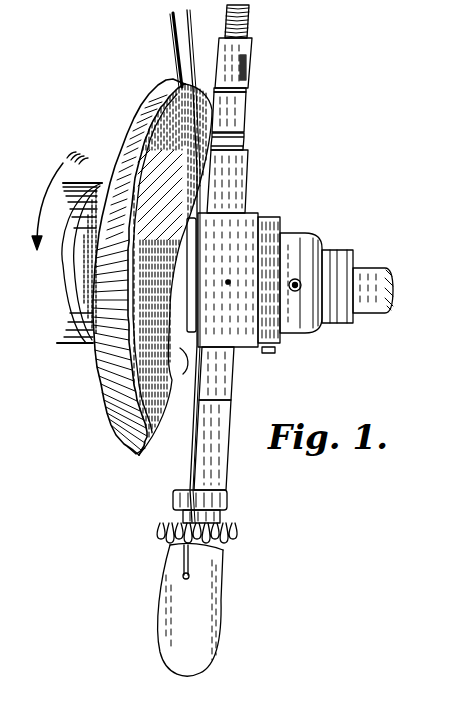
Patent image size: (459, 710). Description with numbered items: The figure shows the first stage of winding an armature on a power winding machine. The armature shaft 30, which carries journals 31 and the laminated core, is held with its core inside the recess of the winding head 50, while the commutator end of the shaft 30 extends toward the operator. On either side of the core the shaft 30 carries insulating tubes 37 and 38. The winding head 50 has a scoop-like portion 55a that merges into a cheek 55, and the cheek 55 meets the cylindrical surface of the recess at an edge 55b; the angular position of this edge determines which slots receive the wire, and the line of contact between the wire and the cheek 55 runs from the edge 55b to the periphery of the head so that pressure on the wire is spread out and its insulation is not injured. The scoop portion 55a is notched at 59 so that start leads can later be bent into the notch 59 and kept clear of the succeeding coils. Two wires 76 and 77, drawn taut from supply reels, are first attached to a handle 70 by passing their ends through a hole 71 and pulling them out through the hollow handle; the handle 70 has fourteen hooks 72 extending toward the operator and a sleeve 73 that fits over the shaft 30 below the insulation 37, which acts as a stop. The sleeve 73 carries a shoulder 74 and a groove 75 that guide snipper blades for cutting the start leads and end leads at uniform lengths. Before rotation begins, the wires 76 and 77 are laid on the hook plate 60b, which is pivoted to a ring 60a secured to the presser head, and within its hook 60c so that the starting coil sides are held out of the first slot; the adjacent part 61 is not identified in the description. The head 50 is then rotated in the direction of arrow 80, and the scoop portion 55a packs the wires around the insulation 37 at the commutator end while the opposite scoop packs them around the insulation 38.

The shaft 30 is at (250, 48).
The journals 31 is at (245, 110).
The insulating tube 37 is at (233, 373).
The insulating tube 38 is at (245, 180).
The winding head 50 is at (128, 125).
The cheek 55 is at (147, 372).
The scoop-like portion 55a is at (128, 452).
The edge 55b is at (167, 308).
The notch 59 is at (175, 405).
The ring 60a is at (313, 235).
The hook plate 60b is at (257, 214).
The hook 60c is at (192, 248).
The stud 61 is at (367, 270).
The handle 70 is at (208, 633).
The hole 71 is at (189, 577).
The hooks 72 is at (163, 542).
The sleeve 73 is at (223, 425).
The shoulder 74 is at (226, 492).
The groove 75 is at (222, 518).
The wire 76 is at (196, 14).
The wire 77 is at (173, 27).
The arrow 80 is at (65, 245).